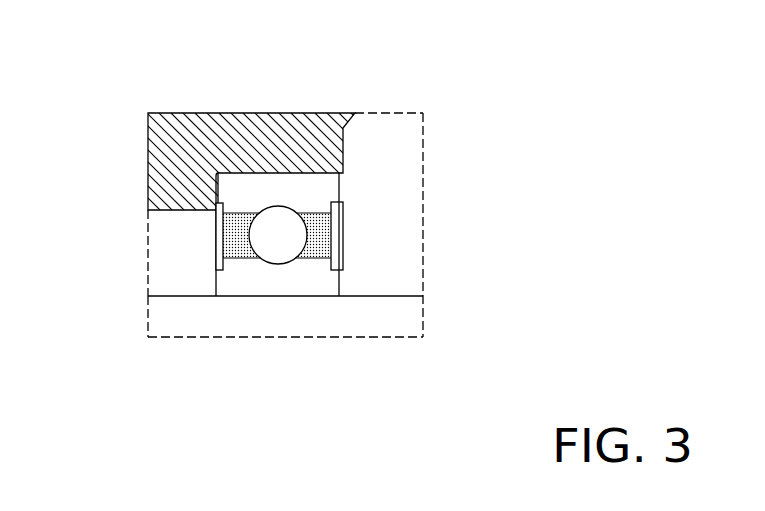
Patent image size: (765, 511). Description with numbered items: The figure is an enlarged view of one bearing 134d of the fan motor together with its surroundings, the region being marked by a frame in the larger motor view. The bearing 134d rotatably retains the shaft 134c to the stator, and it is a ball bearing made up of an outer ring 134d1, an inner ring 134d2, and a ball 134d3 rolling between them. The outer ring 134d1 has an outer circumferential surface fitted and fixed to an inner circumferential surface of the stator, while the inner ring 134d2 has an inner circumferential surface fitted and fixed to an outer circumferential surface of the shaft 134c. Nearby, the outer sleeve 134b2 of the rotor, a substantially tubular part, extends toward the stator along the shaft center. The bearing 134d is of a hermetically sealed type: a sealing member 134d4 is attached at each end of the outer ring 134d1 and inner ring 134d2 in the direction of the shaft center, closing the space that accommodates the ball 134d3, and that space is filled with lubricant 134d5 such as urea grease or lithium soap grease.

The outer sleeve 134b2 is at (333, 117).
The shaft 134c is at (422, 326).
The bearing 134d is at (200, 229).
The outer ring 134d1 is at (340, 178).
The inner ring 134d2 is at (333, 287).
The ball 134d3 is at (278, 258).
The sealing member 134d4 is at (216, 262).
The lubricant 134d5 is at (322, 240).